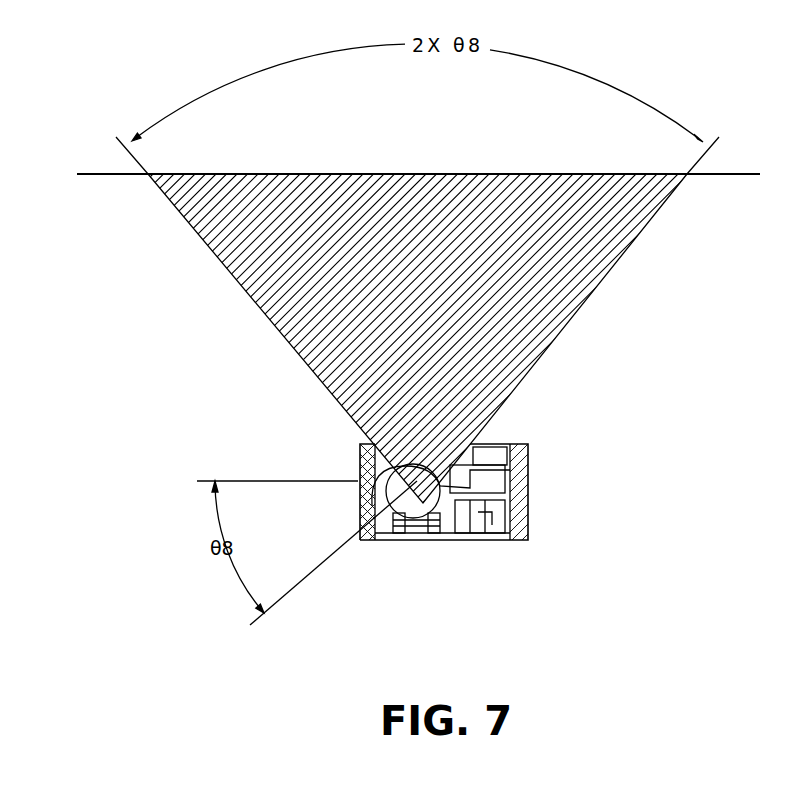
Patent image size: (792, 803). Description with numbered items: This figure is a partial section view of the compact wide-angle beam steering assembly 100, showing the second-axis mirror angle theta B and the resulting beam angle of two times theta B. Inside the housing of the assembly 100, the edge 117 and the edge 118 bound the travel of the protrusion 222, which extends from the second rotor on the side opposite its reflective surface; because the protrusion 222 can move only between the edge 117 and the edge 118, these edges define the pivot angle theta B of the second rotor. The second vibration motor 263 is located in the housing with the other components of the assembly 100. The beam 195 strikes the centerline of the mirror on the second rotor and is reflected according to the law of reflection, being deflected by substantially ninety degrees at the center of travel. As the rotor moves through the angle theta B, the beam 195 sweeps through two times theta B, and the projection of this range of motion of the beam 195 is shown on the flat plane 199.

The compact wide-angle beam steering assembly 100 is at (459, 535).
The edge 117 is at (393, 533).
The edge 118 is at (372, 480).
The beam 195 is at (570, 320).
The flat plane 199 is at (722, 177).
The protrusion 222 is at (360, 508).
The second vibration motor 263 is at (428, 538).